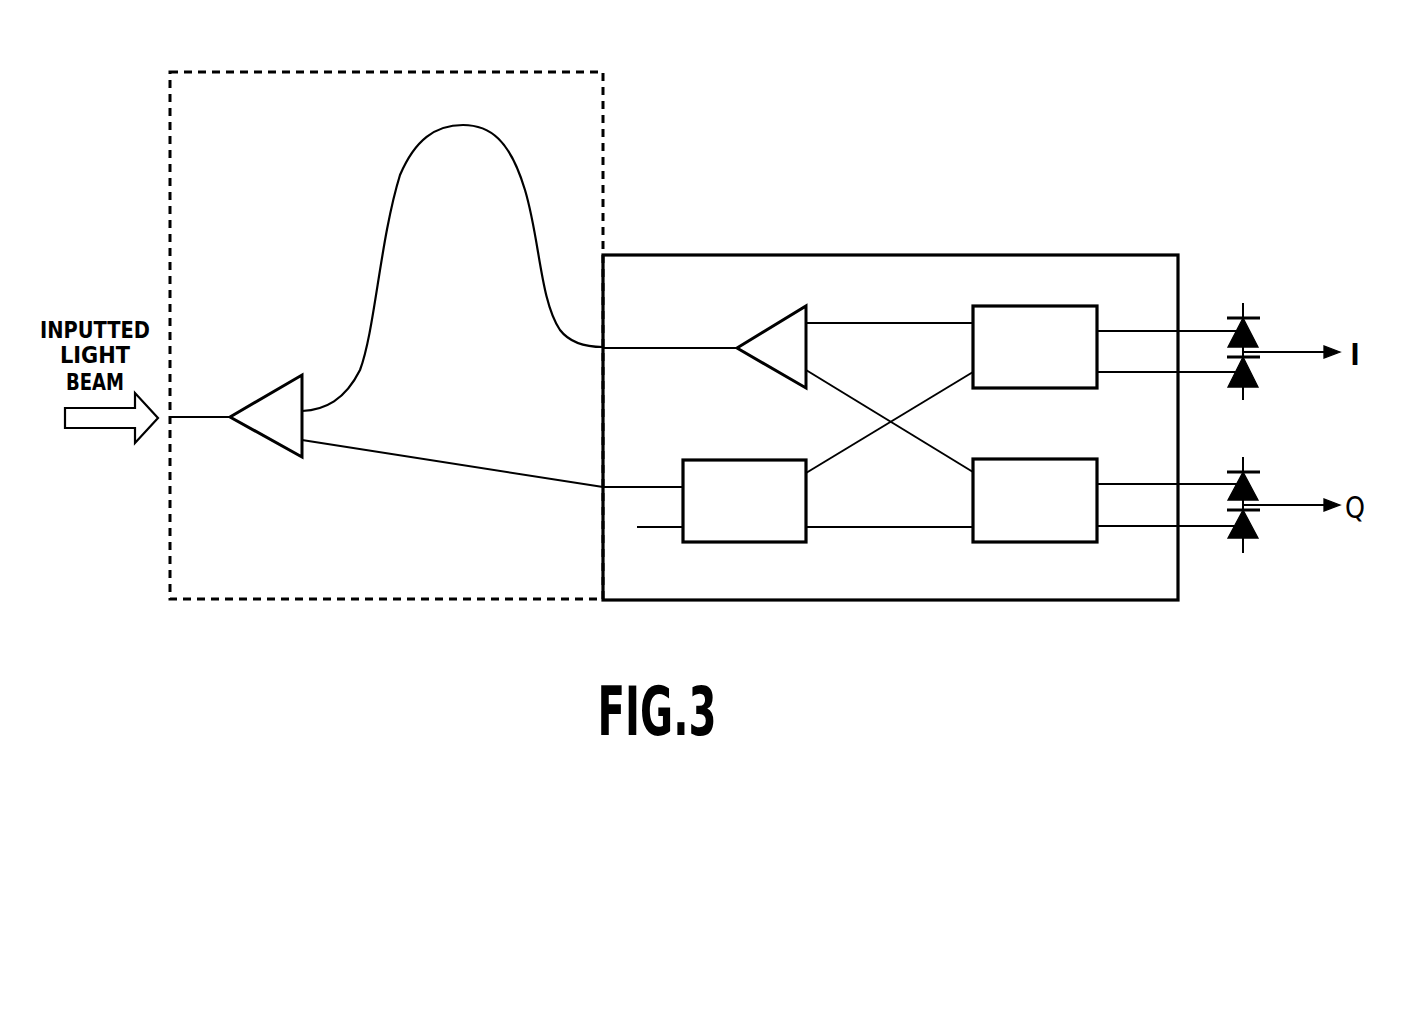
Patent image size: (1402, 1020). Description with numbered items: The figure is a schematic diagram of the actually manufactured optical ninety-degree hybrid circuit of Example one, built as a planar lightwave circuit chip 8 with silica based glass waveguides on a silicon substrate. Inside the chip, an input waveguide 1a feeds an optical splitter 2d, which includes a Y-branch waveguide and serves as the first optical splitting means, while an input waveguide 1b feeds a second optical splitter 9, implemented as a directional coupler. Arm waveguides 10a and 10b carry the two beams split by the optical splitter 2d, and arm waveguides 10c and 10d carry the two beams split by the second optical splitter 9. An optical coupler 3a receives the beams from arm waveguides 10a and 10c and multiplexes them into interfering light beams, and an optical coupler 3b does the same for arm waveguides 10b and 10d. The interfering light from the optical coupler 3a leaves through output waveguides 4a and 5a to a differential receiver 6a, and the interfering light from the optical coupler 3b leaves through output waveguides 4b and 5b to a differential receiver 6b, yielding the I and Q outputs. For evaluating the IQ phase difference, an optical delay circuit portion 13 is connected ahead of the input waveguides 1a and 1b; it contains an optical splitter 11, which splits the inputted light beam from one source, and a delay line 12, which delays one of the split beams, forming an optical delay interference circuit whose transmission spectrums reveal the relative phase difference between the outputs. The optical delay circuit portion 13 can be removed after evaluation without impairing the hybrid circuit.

The input waveguide 1a is at (665, 347).
The input waveguide 1b is at (637, 486).
The optical splitter 2d is at (770, 325).
The optical coupler 3a is at (1038, 306).
The optical coupler 3b is at (1038, 459).
The output waveguide 4a is at (1120, 330).
The output waveguide 4b is at (1120, 484).
The output waveguide 5a is at (1120, 372).
The output waveguide 5b is at (1120, 526).
The differential receiver 6a is at (1243, 334).
The differential receiver 6b is at (1243, 488).
The optical receiver chip 8 is at (880, 255).
The second optical splitter 9 is at (745, 460).
The arm waveguide 10a is at (873, 322).
The arm waveguide 10b is at (850, 388).
The arm waveguide 10c is at (845, 449).
The arm waveguide 10d is at (870, 528).
The optical splitter 11 is at (265, 395).
The delay line 12 is at (464, 124).
The optical delay circuit portion 13 is at (607, 110).